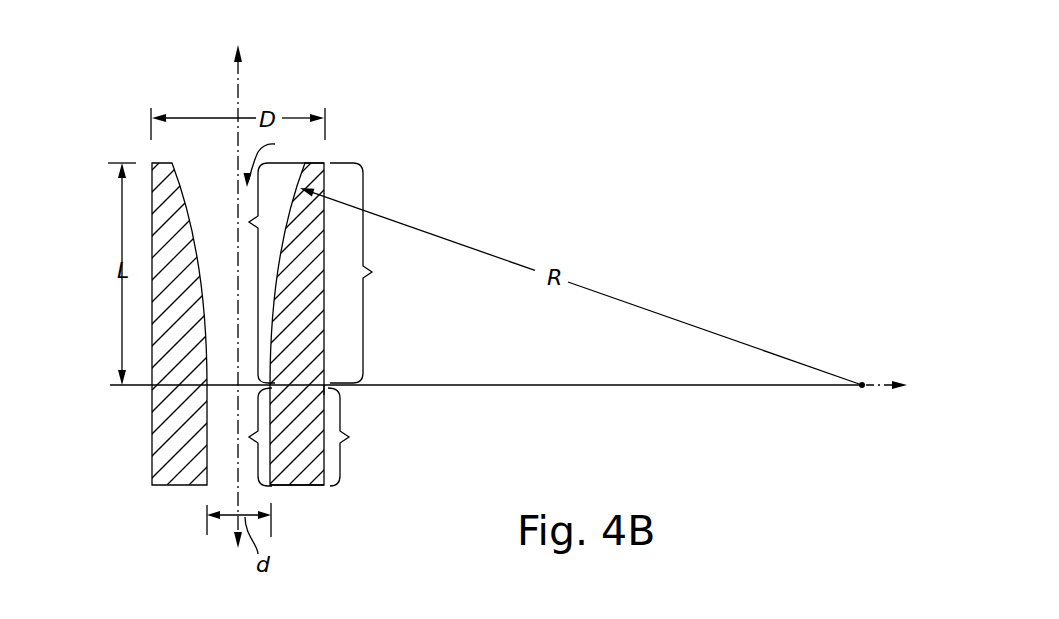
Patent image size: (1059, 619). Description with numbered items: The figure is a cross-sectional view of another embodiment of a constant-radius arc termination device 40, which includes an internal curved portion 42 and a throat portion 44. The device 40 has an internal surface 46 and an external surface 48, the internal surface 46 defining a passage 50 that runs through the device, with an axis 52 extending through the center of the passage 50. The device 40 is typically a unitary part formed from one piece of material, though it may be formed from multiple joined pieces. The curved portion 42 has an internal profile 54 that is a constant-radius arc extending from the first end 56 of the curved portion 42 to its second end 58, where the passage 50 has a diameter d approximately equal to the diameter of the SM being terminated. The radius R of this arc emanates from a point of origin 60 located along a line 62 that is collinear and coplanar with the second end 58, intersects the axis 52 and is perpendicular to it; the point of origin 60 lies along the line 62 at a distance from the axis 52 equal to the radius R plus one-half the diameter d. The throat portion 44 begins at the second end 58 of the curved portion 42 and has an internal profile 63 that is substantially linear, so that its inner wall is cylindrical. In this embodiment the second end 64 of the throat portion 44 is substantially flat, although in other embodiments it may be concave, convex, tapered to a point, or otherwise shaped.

The constant-radius arc termination device 40 is at (335, 92).
The internal curved portion 42 is at (366, 273).
The throat portion 44 is at (356, 437).
The internal surface 46 is at (191, 223).
The external surface 48 is at (326, 272).
The passage 50 is at (273, 160).
The axis 52 is at (238, 99).
The internal profile 54 is at (262, 273).
The first end 56 is at (328, 163).
The second end 58 is at (331, 388).
The point of origin 60 is at (860, 382).
The line 62 is at (878, 390).
The internal profile 63 is at (246, 437).
The second end 64 is at (305, 485).